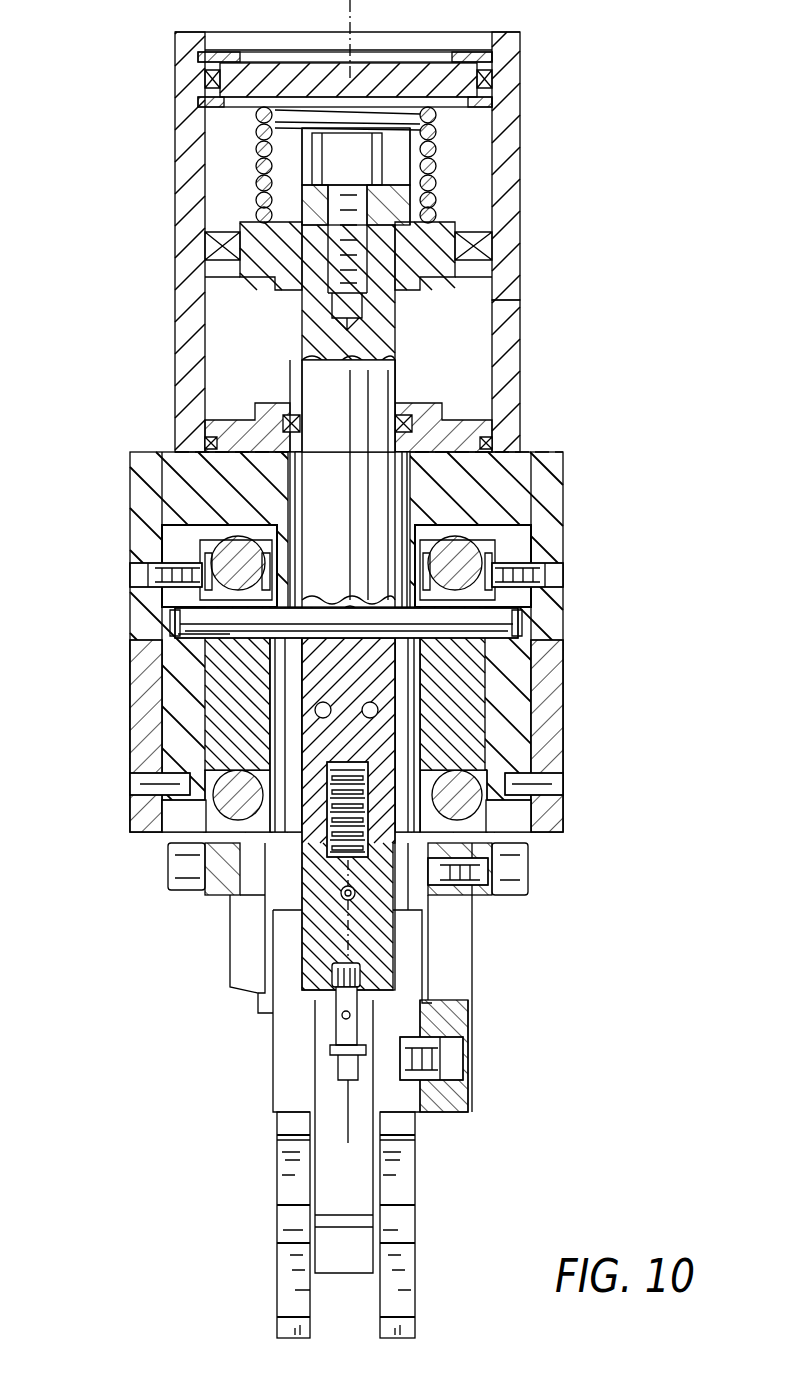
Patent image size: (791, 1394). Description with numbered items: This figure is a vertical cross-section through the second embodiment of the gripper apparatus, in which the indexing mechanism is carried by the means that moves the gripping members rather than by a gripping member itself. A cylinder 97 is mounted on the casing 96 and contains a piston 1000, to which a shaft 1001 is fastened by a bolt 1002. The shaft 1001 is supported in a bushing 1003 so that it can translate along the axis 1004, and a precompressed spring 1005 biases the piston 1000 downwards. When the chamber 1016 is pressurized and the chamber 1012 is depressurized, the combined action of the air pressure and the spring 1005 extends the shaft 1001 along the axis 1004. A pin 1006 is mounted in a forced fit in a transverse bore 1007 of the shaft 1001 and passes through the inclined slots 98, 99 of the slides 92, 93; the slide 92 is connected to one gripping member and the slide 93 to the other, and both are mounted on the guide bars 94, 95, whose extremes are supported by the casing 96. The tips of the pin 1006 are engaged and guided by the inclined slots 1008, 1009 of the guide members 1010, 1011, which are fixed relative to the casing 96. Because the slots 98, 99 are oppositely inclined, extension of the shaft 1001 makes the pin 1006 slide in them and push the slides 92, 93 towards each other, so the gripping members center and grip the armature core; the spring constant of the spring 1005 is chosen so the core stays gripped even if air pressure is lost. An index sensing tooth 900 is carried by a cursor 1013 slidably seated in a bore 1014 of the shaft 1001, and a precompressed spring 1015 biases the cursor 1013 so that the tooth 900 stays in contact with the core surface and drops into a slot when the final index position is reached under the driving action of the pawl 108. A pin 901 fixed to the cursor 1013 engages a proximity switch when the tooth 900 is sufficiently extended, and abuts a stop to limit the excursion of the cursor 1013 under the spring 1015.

The axis 1004 is at (354, 12).
The precompressed spring 1005 is at (405, 128).
The bolt 1002 is at (372, 150).
The chamber 1016 is at (475, 190).
The cylinder 97 is at (514, 262).
The chamber 1012 is at (478, 347).
The shaft 1001 is at (326, 352).
The piston 1000 is at (434, 290).
The bushing 1003 is at (420, 470).
The casing 96 is at (560, 470).
The guide bar 94 is at (470, 548).
The guide bar 95 is at (232, 548).
The transverse bore 1007 is at (345, 612).
The pin 1006 is at (528, 590).
The inclined slot 1008 is at (520, 622).
The inclined slot 1009 is at (172, 618).
The inclined slot 98 is at (520, 632).
The inclined slot 99 is at (176, 630).
The slide 93 is at (215, 707).
The slide 92 is at (465, 712).
The guide member 1011 is at (156, 747).
The guide member 1010 is at (514, 751).
The precompressed spring 1015 is at (330, 848).
The bore 1014 is at (300, 880).
The pin 901 is at (362, 895).
The cursor 1013 is at (372, 948).
The index sensing tooth 900 is at (338, 1058).
The pawl 108 is at (338, 1262).